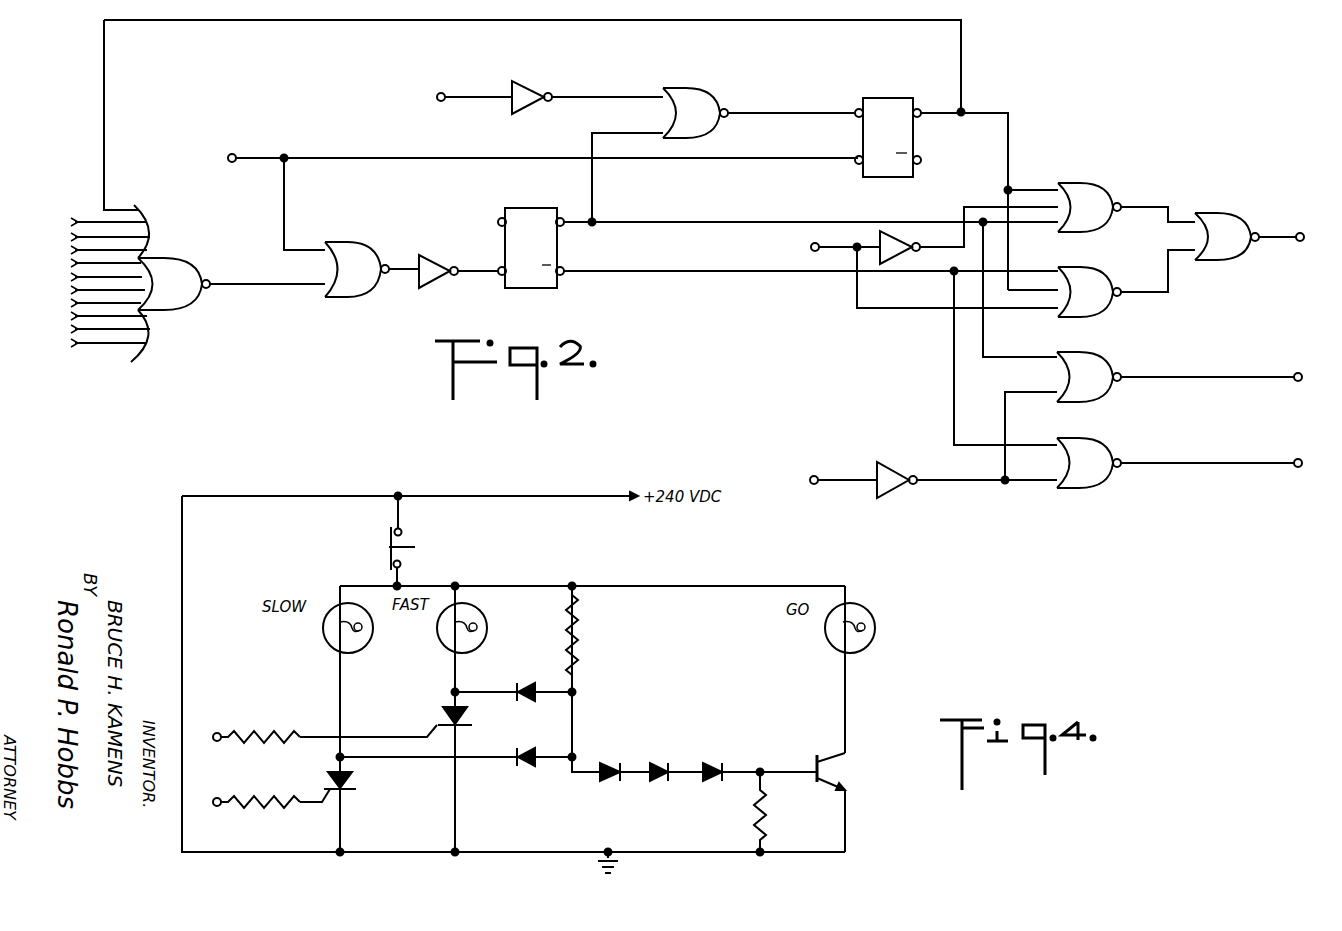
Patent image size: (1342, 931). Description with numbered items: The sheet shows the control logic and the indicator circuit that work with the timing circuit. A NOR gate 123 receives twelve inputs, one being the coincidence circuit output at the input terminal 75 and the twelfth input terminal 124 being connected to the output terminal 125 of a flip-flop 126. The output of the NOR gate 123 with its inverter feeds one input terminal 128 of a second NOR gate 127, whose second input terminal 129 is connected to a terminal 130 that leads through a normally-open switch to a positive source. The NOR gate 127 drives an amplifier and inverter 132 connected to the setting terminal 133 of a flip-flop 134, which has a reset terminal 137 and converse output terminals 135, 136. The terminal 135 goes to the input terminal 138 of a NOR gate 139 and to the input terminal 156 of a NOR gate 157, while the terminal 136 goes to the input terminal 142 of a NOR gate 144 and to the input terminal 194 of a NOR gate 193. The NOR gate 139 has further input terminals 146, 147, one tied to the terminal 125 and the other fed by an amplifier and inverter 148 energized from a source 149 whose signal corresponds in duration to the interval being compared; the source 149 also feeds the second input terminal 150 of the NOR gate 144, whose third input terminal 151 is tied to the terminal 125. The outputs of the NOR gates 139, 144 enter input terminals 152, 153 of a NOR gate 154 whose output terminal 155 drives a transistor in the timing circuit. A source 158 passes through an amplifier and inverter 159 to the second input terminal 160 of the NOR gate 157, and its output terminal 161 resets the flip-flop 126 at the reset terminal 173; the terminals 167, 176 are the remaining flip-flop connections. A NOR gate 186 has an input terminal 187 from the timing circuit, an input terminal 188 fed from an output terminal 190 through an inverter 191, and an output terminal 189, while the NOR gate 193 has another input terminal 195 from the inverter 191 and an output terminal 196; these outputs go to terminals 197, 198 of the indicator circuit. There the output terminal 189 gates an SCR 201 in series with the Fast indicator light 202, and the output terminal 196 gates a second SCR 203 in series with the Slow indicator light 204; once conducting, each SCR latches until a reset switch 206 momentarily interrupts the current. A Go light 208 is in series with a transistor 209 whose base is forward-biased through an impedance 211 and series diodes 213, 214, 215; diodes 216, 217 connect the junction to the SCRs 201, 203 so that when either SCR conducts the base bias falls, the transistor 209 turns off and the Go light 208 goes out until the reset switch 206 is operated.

In FIG. 2, the input terminal 75 is at (80, 222).
In FIG. 2, the NOR gate 123 is at (190, 268).
In FIG. 2, the twelfth input terminal 124 is at (128, 206).
In FIG. 2, the second NOR gate 127 is at (372, 242).
In FIG. 2, the input terminal 128 is at (318, 296).
In FIG. 2, the second input terminal 129 is at (326, 244).
In FIG. 2, the terminal 130 is at (237, 153).
In FIG. 2, the amplifier and inverter 132 is at (428, 292).
In FIG. 2, the setting terminal 133 is at (498, 266).
In FIG. 2, the flip-flop 134 is at (529, 206).
In FIG. 2, the output terminal 135 is at (565, 226).
In FIG. 2, the output terminal 136 is at (565, 276).
In FIG. 2, the reset terminal 137 is at (498, 220).
In FIG. 2, the input terminal 138 is at (1057, 228).
In FIG. 2, the NOR gate 139 is at (1105, 192).
In FIG. 2, the input terminal 142 is at (1060, 272).
In FIG. 2, the NOR gate 144 is at (1100, 305).
In FIG. 2, the input terminal 146 is at (1058, 187).
In FIG. 2, the input terminal 147 is at (1040, 188).
In FIG. 2, the amplifier and inverter 148 is at (892, 230).
In FIG. 2, the source 149 is at (811, 249).
In FIG. 2, the second input terminal 150 is at (1056, 306).
In FIG. 2, the third input terminal 151 is at (1045, 308).
In FIG. 2, the input terminal 152 is at (1193, 216).
In FIG. 2, the input terminal 153 is at (1194, 258).
In FIG. 2, the NOR gate 154 is at (1245, 226).
In FIG. 2, the output terminal 155 is at (1304, 243).
In FIG. 2, the input terminal 156 is at (658, 125).
In FIG. 2, the NOR gate 157 is at (705, 92).
In FIG. 2, the source 158 is at (446, 91).
In FIG. 2, the amplifier and inverter 159 is at (530, 90).
In FIG. 2, the second input terminal 160 is at (650, 90).
In FIG. 2, the output terminal 161 is at (742, 112).
In FIG. 2, the set input of flip-flop 173 167 is at (856, 166).
In FIG. 2, the flip-flop 126 is at (877, 178).
In FIG. 2, the reset terminal 173 is at (856, 106).
In FIG. 2, the output terminal 125 is at (923, 118).
In FIG. 2, the M-bar output of flip-flop 173 176 is at (922, 161).
In FIG. 2, the NOR gate 186 is at (1108, 358).
In FIG. 2, the input terminal 187 is at (1057, 362).
In FIG. 2, the input terminal 188 is at (1055, 397).
In FIG. 2, the output terminal 189 is at (1122, 381).
In FIG. 2, the output terminal 190 is at (814, 474).
In FIG. 2, the inverter 191 is at (890, 462).
In FIG. 2, the second NOR gate 193 is at (1110, 446).
In FIG. 2, the input terminal 194 is at (1048, 440).
In FIG. 2, the input terminal 195 is at (1050, 482).
In FIG. 2, the output terminal 196 is at (1123, 468).
In FIG. 2, the output terminal 197 is at (1300, 372).
In FIG. 4, the output terminal 197 is at (220, 732).
In FIG. 2, the output terminal 198 is at (1300, 458).
In FIG. 4, the output terminal 198 is at (220, 797).
In FIG. 4, the silicon-controlled rectifier 201 is at (440, 711).
In FIG. 4, the indicator light 202 is at (442, 643).
In FIG. 4, the second SCR 203 is at (356, 780).
In FIG. 4, the indicator light 204 is at (328, 647).
In FIG. 4, the reset switch 206 is at (385, 547).
In FIG. 4, the third light 208 is at (876, 643).
In FIG. 4, the transistor 209 is at (814, 760).
In FIG. 4, the impedance 211 is at (580, 640).
In FIG. 4, the diode 213 is at (608, 760).
In FIG. 4, the diode 214 is at (660, 760).
In FIG. 4, the diode 215 is at (712, 760).
In FIG. 4, the diode 216 is at (520, 682).
In FIG. 4, the diode 217 is at (525, 770).